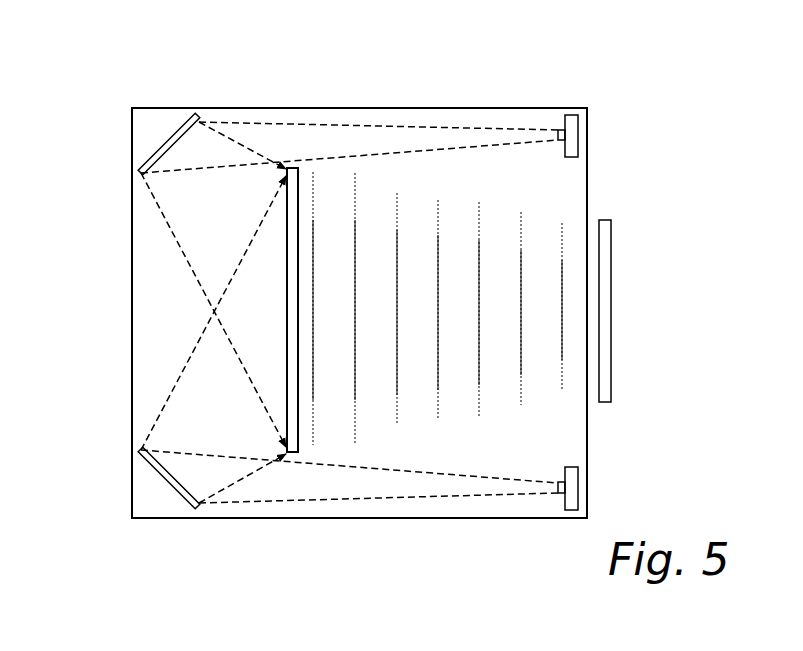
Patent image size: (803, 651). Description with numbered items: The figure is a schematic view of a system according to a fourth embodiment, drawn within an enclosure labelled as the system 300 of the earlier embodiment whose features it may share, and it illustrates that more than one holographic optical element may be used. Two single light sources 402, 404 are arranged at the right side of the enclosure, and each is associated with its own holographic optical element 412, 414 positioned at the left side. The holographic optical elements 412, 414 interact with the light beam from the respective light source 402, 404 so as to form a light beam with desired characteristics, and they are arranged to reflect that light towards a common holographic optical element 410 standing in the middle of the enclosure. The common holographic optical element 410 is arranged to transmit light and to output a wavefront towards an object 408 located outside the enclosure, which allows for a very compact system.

The system 300 is at (324, 58).
The light source 402 is at (568, 118).
The light source 404 is at (574, 494).
The object 408 is at (608, 297).
The common holographic optical element 410 is at (292, 237).
The holographic optical element 412 is at (167, 140).
The holographic optical element 414 is at (173, 482).